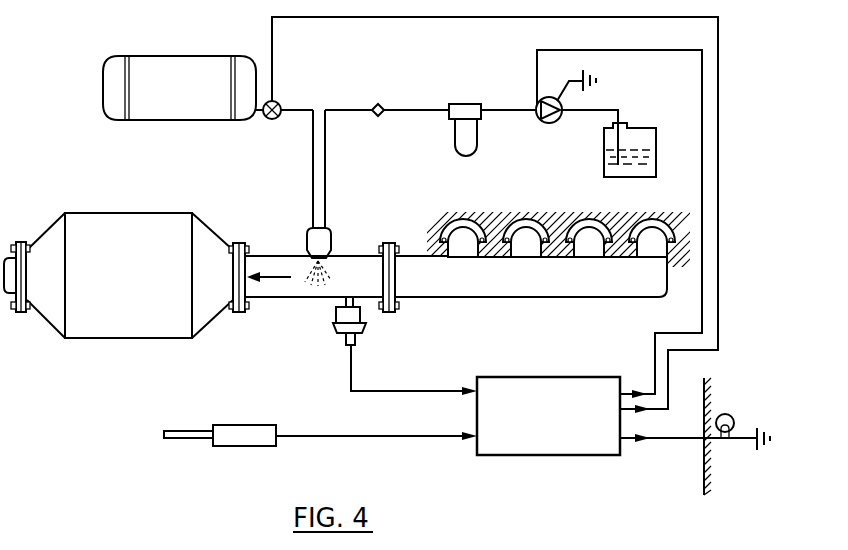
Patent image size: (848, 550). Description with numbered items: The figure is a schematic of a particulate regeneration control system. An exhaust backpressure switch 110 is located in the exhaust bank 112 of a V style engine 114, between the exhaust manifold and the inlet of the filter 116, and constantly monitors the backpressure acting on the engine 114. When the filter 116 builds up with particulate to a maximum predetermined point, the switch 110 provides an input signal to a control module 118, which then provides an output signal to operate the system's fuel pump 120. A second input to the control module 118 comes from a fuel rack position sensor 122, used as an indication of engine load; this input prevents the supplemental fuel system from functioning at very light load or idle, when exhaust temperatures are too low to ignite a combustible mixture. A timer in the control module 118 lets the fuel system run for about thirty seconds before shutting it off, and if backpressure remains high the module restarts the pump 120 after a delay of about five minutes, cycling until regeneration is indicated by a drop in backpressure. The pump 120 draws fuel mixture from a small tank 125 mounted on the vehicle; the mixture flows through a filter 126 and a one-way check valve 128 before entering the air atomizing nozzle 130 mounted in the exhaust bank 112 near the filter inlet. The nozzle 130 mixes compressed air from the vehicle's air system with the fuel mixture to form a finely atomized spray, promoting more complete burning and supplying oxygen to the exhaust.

The exhaust backpressure switch 110 is at (343, 313).
The exhaust bank 112 is at (593, 282).
The engine 114 is at (490, 228).
The filter 116 is at (128, 330).
The control module 118 is at (540, 437).
The fuel pump 120 is at (538, 100).
The fuel rack position sensor 122 is at (250, 432).
The tank 125 is at (603, 135).
The filter 126 is at (455, 138).
The one-way check valve 128 is at (381, 103).
The air atomizing nozzle 130 is at (308, 236).